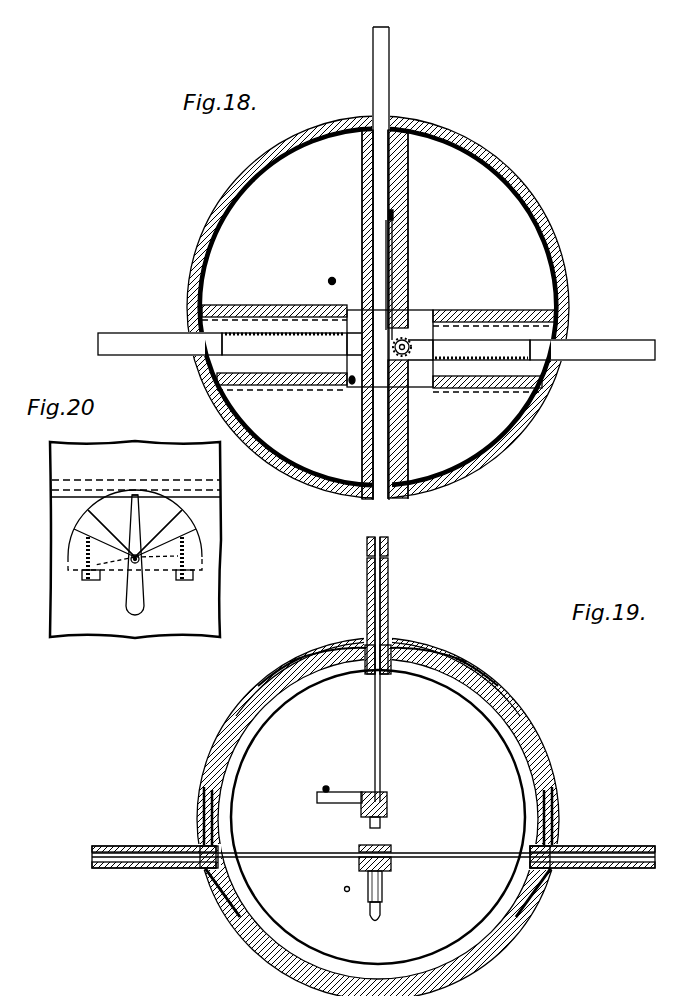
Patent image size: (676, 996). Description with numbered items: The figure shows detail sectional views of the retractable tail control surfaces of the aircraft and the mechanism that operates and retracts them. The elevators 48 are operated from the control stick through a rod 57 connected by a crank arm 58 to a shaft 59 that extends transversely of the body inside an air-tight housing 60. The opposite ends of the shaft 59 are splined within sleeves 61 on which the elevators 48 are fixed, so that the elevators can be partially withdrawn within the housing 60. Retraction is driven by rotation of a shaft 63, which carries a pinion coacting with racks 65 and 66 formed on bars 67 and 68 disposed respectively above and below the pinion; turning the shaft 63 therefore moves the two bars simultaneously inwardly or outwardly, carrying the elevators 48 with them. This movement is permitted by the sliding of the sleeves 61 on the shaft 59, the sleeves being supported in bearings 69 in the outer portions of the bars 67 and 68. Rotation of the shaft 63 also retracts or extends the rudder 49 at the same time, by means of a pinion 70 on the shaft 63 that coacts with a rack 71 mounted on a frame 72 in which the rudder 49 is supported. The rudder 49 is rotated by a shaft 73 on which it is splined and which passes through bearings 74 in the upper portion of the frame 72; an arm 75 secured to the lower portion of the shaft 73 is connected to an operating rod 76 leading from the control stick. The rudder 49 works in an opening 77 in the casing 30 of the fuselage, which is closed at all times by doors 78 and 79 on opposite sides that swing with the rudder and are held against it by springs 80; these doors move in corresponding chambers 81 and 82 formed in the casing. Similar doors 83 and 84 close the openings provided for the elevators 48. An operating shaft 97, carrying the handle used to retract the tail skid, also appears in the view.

In FIG. 18, the casing 30 is at (568, 258).
In FIG. 20, the casing 30 is at (212, 592).
In FIG. 19, the elevators 48 is at (152, 870).
In FIG. 20, the rudder 49 is at (140, 500).
In FIG. 19, the rudder 49 is at (389, 590).
In FIG. 19, the rod 57 is at (381, 922).
In FIG. 19, the crank arm 58 is at (385, 890).
In FIG. 19, the shaft 59 is at (307, 862).
In FIG. 18, the air-tight housing 60 is at (512, 216).
In FIG. 20, the air-tight housing 60 is at (215, 507).
In FIG. 19, the air-tight housing 60 is at (512, 740).
In FIG. 19, the sleeves 61 is at (225, 848).
In FIG. 18, the shaft 63 is at (410, 340).
In FIG. 18, the rack 65 is at (278, 333).
In FIG. 18, the rack 66 is at (470, 360).
In FIG. 18, the bar 67 is at (305, 325).
In FIG. 18, the bar 68 is at (152, 347).
In FIG. 19, the bearings 69 is at (113, 870).
In FIG. 18, the pinion 70 is at (413, 358).
In FIG. 18, the rack 71 is at (400, 253).
In FIG. 18, the frame 72 is at (380, 190).
In FIG. 20, the frame 72 is at (140, 602).
In FIG. 20, the shaft 73 is at (125, 580).
In FIG. 19, the shaft 73 is at (381, 745).
In FIG. 18, the bearings 74 is at (389, 36).
In FIG. 20, the bearings 74 is at (140, 558).
In FIG. 19, the bearings 74 is at (389, 547).
In FIG. 19, the arm 75 is at (345, 797).
In FIG. 18, the operating rod 76 is at (333, 279).
In FIG. 19, the operating rod 76 is at (326, 786).
In FIG. 20, the opening 77 is at (52, 497).
In FIG. 20, the door 78 is at (113, 500).
In FIG. 19, the door 78 is at (318, 648).
In FIG. 20, the door 79 is at (153, 508).
In FIG. 19, the door 79 is at (415, 650).
In FIG. 20, the springs 80 is at (200, 556).
In FIG. 19, the chamber 81 is at (300, 660).
In FIG. 19, the chamber 82 is at (466, 668).
In FIG. 19, the door 83 is at (202, 805).
In FIG. 19, the door 84 is at (223, 905).
In FIG. 18, the operating shaft 97 is at (353, 385).
In FIG. 19, the operating shaft 97 is at (346, 893).